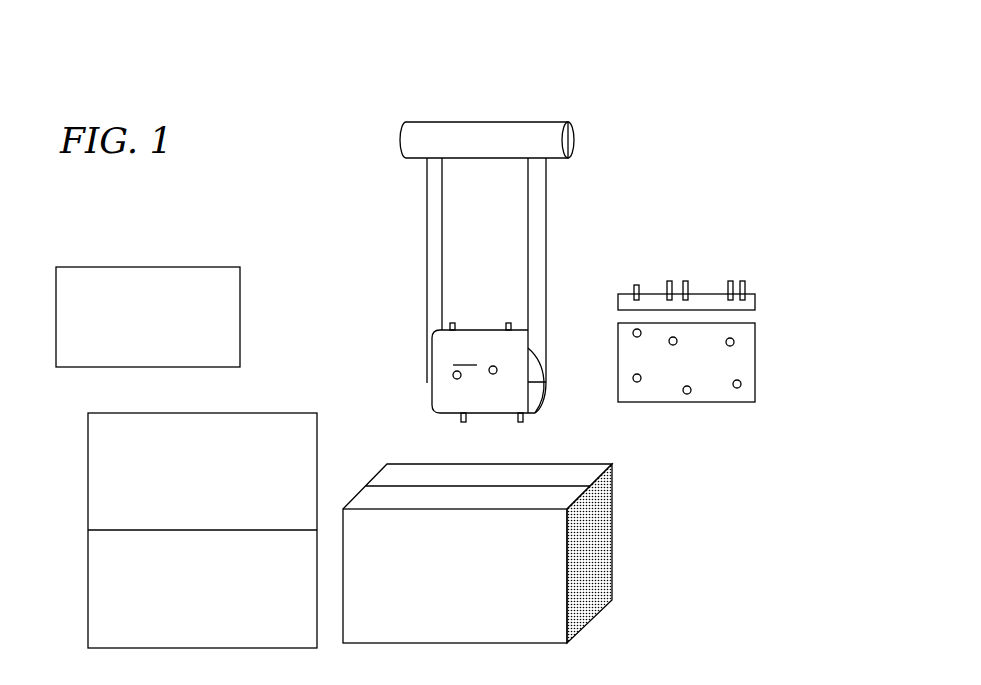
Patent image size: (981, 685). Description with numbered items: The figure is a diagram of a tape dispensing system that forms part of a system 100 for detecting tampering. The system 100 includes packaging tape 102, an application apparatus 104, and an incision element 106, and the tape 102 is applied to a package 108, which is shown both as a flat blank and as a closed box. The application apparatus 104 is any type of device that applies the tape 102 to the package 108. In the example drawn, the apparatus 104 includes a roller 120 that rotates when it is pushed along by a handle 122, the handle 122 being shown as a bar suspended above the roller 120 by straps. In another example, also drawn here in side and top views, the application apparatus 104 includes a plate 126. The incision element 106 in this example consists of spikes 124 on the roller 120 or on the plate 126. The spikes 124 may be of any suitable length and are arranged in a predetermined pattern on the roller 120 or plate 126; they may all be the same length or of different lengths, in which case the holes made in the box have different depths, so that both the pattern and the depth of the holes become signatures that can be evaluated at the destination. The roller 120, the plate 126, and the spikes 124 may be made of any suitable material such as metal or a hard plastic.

The system 100 is at (749, 175).
The packaging tape 102 is at (178, 312).
The application apparatus 104 is at (482, 107).
The incision element 106 is at (612, 383).
The package 108 is at (80, 603).
The roller 120 is at (445, 360).
The handle 122 is at (522, 121).
The spikes 124 is at (510, 323).
The plate 126 is at (755, 300).